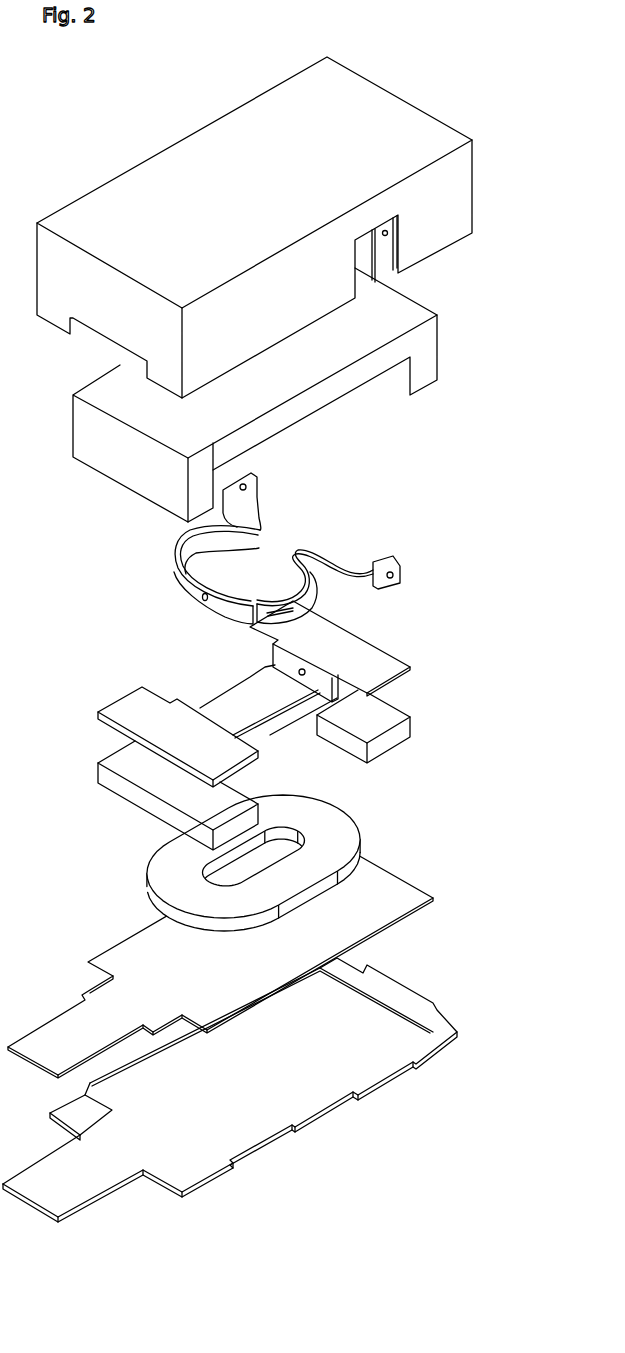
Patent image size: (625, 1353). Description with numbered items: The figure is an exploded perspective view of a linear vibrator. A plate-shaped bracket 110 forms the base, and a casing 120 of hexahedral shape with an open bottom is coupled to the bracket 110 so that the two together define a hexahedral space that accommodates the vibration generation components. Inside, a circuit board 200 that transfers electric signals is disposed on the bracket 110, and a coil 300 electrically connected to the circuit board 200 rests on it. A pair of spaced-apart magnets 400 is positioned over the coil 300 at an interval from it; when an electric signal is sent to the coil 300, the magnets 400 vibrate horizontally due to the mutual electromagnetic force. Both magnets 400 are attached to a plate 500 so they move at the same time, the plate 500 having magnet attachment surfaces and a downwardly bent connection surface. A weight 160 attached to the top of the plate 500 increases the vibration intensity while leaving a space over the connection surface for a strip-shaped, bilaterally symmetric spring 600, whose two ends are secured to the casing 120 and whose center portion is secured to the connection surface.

The bracket 110 is at (387, 990).
The casing 120 is at (467, 190).
The weight 160 is at (430, 352).
The circuit board 200 is at (385, 880).
The coil 300 is at (358, 830).
The pair of magnets 400 is at (411, 728).
The plate 500 is at (380, 658).
The spring 600 is at (342, 557).